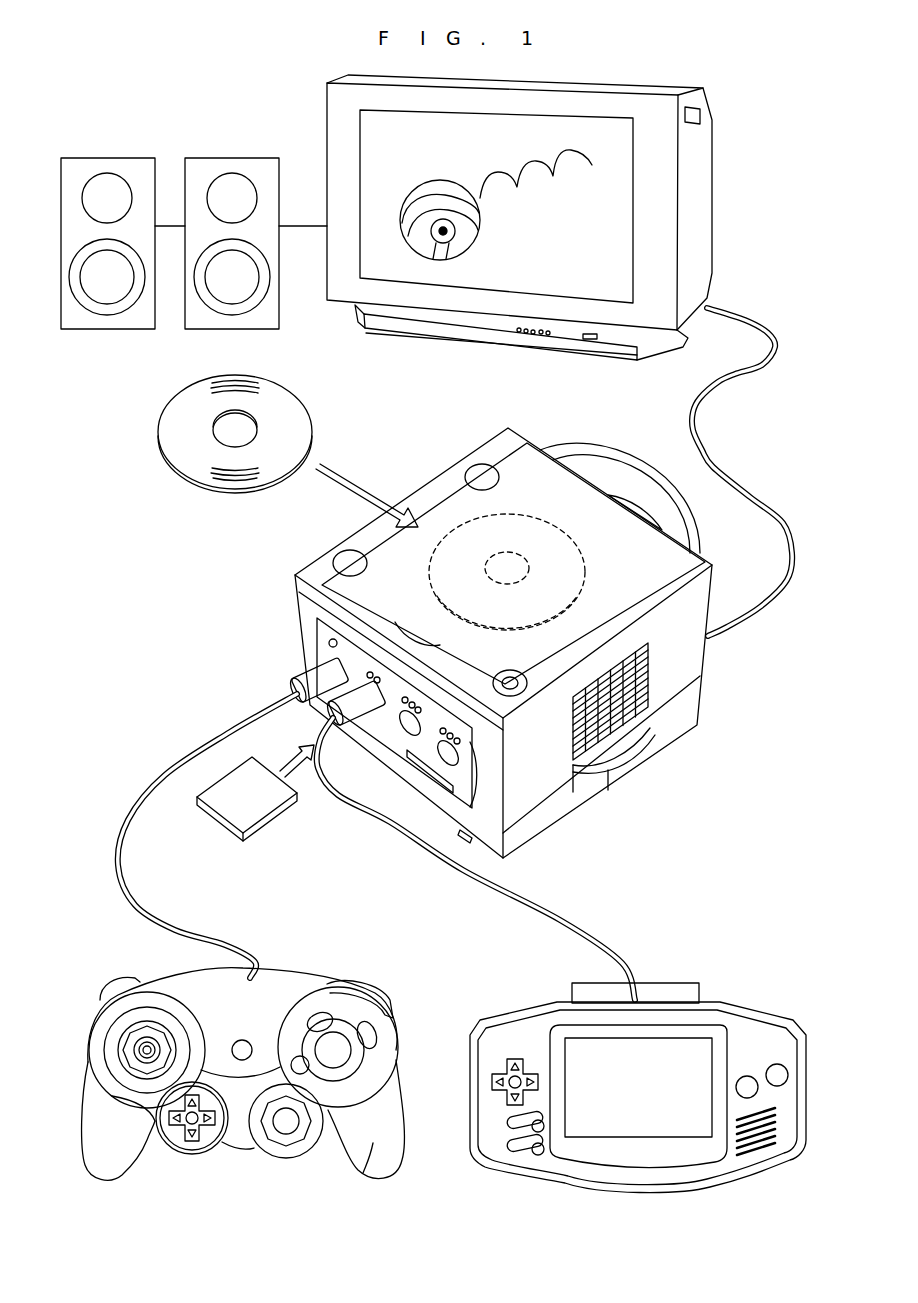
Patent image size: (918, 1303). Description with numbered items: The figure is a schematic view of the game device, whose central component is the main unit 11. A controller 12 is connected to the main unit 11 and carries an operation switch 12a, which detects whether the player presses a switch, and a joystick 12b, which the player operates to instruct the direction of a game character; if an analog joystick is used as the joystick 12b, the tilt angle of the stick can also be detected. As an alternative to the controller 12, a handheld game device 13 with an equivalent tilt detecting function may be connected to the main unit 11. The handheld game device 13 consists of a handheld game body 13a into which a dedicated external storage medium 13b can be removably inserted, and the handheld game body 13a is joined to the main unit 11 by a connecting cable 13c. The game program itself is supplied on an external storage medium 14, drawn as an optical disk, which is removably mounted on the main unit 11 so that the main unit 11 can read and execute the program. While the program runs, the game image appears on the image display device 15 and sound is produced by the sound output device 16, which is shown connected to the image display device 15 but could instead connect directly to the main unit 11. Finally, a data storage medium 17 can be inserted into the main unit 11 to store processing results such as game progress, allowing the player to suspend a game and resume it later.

The main unit 11 is at (678, 671).
The controller 12 is at (247, 1073).
The operation switch 12a is at (135, 976).
The joystick 12b is at (130, 1040).
The handheld game device 13 is at (660, 1063).
The handheld game body 13a is at (732, 1030).
The external storage medium 13b is at (665, 982).
The connecting cable 13c is at (536, 905).
The external storage medium 14 is at (233, 490).
The image display device 15 is at (704, 122).
The sound output device 16 is at (135, 158).
The data storage medium 17 is at (272, 820).